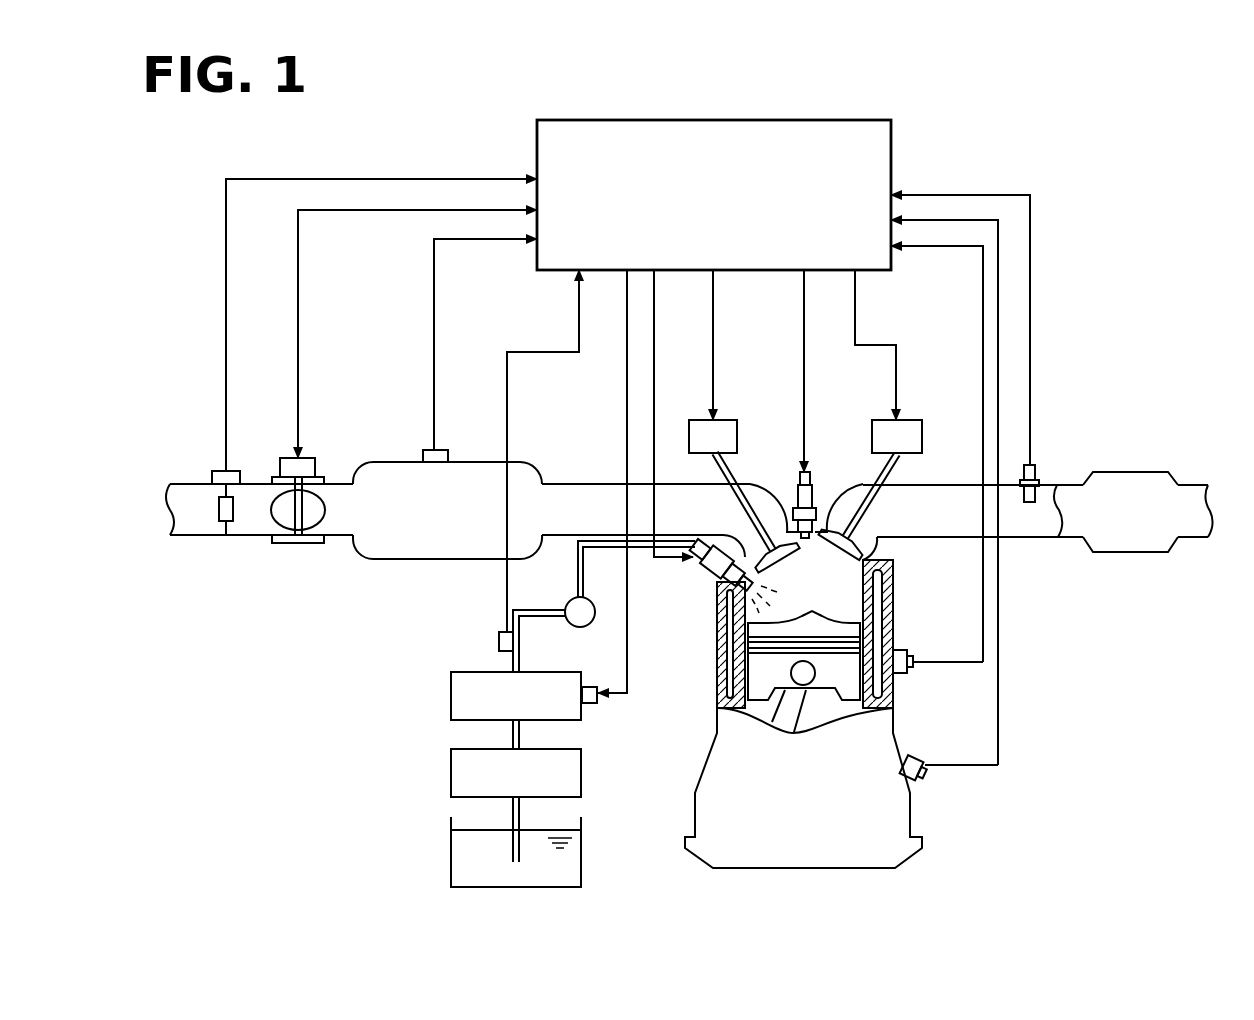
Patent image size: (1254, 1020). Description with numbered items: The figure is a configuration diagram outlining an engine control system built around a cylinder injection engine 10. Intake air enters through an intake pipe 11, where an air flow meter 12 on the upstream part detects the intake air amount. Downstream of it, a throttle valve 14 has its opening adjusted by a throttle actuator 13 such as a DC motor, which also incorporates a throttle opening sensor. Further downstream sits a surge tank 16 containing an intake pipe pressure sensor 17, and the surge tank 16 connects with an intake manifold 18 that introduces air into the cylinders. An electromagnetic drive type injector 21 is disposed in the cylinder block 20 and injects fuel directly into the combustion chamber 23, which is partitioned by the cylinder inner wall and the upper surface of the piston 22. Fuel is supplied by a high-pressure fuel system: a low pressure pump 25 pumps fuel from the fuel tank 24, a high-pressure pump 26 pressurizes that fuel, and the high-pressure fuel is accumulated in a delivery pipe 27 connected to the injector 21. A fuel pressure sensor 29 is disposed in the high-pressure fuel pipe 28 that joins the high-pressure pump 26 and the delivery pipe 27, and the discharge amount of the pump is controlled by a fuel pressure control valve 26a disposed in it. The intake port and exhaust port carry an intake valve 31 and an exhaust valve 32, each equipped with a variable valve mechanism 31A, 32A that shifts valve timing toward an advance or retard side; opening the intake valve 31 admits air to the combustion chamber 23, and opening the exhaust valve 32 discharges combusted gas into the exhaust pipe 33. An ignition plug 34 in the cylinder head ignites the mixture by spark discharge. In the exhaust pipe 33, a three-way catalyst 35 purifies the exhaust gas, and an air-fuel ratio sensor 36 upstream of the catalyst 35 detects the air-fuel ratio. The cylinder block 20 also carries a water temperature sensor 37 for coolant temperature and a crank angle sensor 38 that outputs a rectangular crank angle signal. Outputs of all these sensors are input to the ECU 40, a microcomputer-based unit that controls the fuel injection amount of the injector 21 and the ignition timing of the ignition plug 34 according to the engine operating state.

The engine 10 is at (899, 332).
The intake pipe 11 is at (236, 535).
The air flow meter 12 is at (240, 470).
The throttle actuator 13 is at (312, 461).
The throttle valve 14 is at (325, 522).
The surge tank 16 is at (434, 559).
The intake pipe pressure sensor 17 is at (438, 452).
The intake manifold 18 is at (582, 484).
The cylinder block 20 is at (893, 632).
The injector 21 is at (718, 580).
The piston 22 is at (760, 673).
The combustion chamber 23 is at (848, 598).
The fuel tank 24 is at (451, 852).
The low pressure pump 25 is at (451, 772).
The high-pressure pump 26 is at (451, 693).
The fuel pressure control valve 26a is at (595, 704).
The delivery pipe 27 is at (585, 627).
The high-pressure fuel pipe 28 is at (548, 617).
The fuel pressure sensor 29 is at (499, 642).
The intake valve 31 is at (776, 542).
The variable valve mechanism 31A is at (730, 420).
The exhaust valve 32 is at (866, 550).
The variable valve mechanism 32A is at (910, 420).
The exhaust pipe 33 is at (1030, 537).
The ignition plug 34 is at (815, 490).
The catalyst 35 is at (1137, 460).
The air-fuel ratio sensor 36 is at (1039, 477).
The water temperature sensor 37 is at (913, 668).
The crank angle sensor 38 is at (906, 762).
The ECU 40 is at (865, 120).